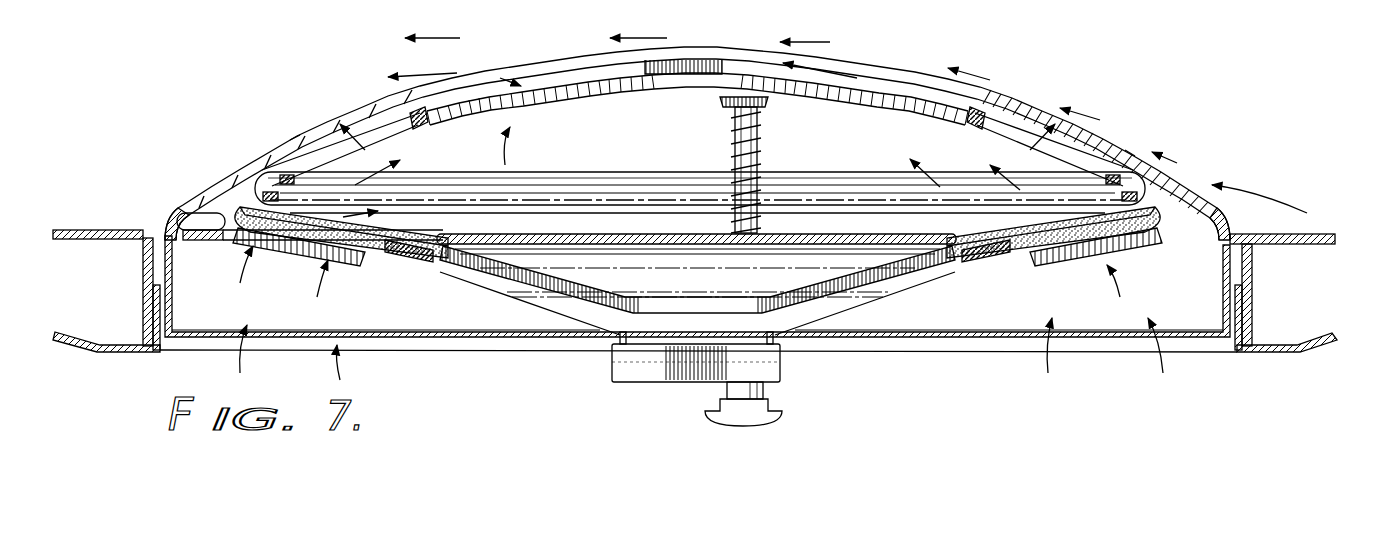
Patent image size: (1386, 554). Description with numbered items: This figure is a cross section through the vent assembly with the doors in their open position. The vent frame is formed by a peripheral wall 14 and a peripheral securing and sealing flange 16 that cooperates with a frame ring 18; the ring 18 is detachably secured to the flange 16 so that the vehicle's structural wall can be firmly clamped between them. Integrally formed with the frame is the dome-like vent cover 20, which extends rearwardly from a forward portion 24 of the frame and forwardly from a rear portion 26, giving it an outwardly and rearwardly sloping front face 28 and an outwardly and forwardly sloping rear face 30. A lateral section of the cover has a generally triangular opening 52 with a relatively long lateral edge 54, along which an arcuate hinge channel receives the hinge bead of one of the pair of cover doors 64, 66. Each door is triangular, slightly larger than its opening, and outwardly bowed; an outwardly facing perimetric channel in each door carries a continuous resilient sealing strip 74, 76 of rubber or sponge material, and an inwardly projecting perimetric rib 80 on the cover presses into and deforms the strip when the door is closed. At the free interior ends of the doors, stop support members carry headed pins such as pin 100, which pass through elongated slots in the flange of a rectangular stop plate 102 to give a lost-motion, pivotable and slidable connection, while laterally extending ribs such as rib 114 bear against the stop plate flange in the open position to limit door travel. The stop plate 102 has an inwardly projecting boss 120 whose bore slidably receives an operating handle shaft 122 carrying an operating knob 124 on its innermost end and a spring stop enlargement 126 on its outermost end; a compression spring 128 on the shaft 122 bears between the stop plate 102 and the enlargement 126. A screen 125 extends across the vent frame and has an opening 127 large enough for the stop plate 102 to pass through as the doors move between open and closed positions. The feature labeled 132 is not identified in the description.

The peripheral wall 14 is at (1248, 299).
The peripheral securing and sealing flange 16 is at (1306, 246).
The frame ring 18 is at (1262, 354).
The vent cover 20 is at (857, 56).
The forward portion of the vent frame 24 is at (1322, 236).
The rear portion of the vent frame 26 is at (96, 229).
The front face 28 is at (1133, 154).
The rear face 30 is at (306, 133).
The triangular opening 52 is at (912, 95).
The lateral edge 54 is at (602, 176).
The cover door 64 is at (648, 220).
The cover door 66 is at (582, 236).
The resilient sealing strip 74 is at (316, 230).
The resilient sealing strip 76 is at (400, 256).
The perimetric rib 80 is at (416, 129).
The headed pin 100 is at (783, 364).
The stop plate 102 is at (660, 374).
The rib 114 is at (610, 341).
The boss 120 is at (765, 391).
The operating handle shaft 122 is at (760, 166).
The operating knob 124 is at (716, 421).
The screen 125 is at (370, 333).
The enlargement 126 is at (722, 104).
The opening 127 is at (795, 330).
The compression spring 128 is at (760, 140).
The dome boss 132 is at (733, 47).